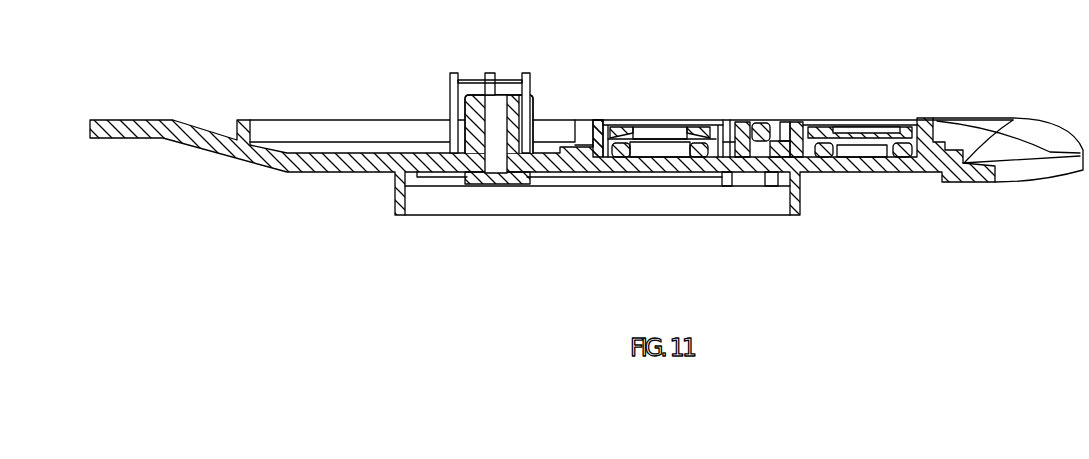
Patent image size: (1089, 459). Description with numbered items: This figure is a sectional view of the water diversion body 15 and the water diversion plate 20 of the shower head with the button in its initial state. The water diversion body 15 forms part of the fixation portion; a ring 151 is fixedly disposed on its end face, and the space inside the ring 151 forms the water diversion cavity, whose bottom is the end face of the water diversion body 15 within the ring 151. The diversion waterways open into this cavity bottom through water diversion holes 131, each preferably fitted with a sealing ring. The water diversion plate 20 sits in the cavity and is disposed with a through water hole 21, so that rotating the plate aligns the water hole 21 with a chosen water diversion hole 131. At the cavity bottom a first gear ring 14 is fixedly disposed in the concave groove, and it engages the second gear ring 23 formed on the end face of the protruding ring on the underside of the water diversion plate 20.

The water diversion body 15 is at (365, 160).
The ring 151 is at (598, 130).
The water diversion plate 20 is at (707, 128).
The water hole 21 is at (663, 133).
The water diversion hole 131 is at (662, 153).
The first gear ring 14 is at (752, 138).
The second gear ring 23 is at (780, 149).